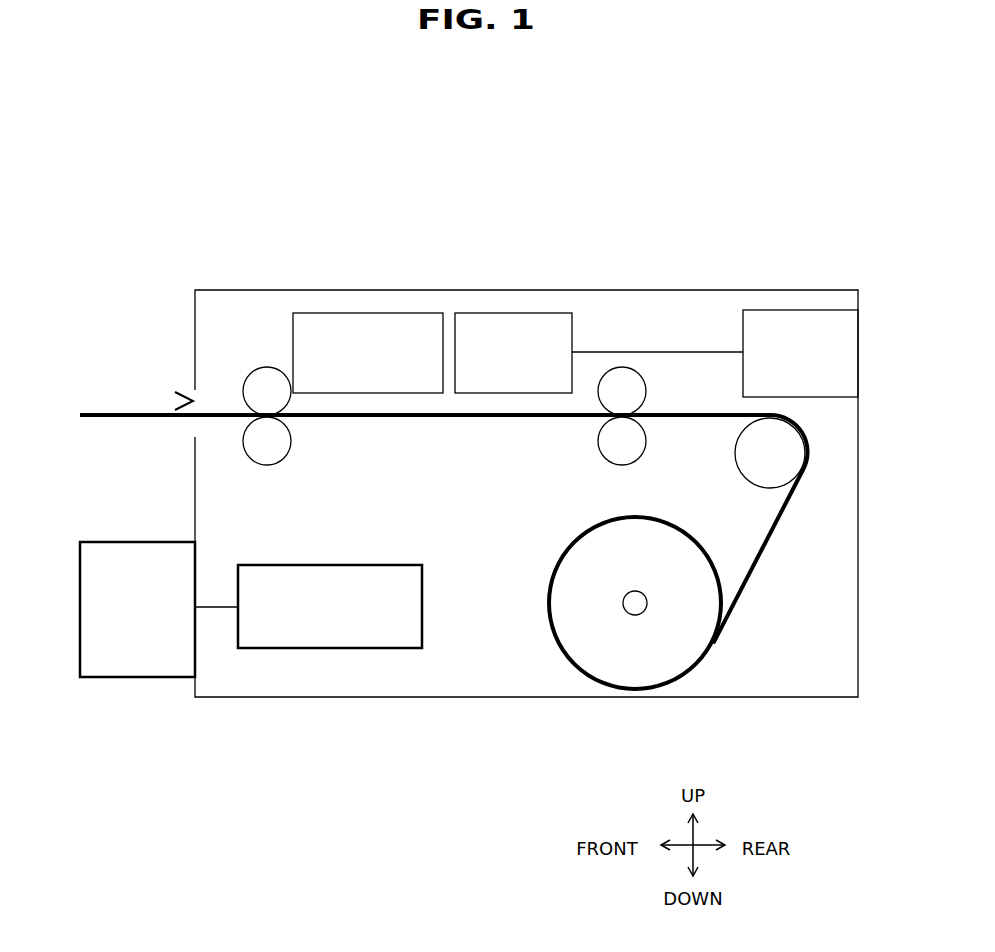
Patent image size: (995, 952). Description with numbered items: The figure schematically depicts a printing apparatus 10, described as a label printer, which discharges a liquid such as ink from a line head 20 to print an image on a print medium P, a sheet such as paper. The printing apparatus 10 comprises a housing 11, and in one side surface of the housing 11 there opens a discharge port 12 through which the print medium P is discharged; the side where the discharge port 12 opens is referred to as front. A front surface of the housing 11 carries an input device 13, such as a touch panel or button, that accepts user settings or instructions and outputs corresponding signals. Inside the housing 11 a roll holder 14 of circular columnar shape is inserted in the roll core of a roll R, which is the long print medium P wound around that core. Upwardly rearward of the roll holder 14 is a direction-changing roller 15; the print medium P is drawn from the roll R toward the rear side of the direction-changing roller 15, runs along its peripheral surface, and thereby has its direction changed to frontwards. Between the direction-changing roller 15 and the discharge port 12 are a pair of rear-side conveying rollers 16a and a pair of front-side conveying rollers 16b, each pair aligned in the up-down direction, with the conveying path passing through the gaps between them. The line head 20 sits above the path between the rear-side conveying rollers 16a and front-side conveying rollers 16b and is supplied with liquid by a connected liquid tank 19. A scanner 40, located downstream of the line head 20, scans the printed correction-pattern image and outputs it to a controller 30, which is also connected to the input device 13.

The printing apparatus 10 is at (457, 158).
The housing 11 is at (333, 290).
The discharge port 12 is at (175, 395).
The input device 13 is at (80, 575).
The roll holder 14 is at (635, 592).
The direction-changing roller 15 is at (760, 465).
The rear-side conveying rollers 16a is at (605, 395).
The front-side conveying rollers 16b is at (280, 388).
The liquid tank 19 is at (797, 318).
The line head 20 is at (500, 315).
The controller 30 is at (322, 562).
The scanner 40 is at (375, 318).
The print medium P is at (133, 423).
The roll R is at (553, 562).